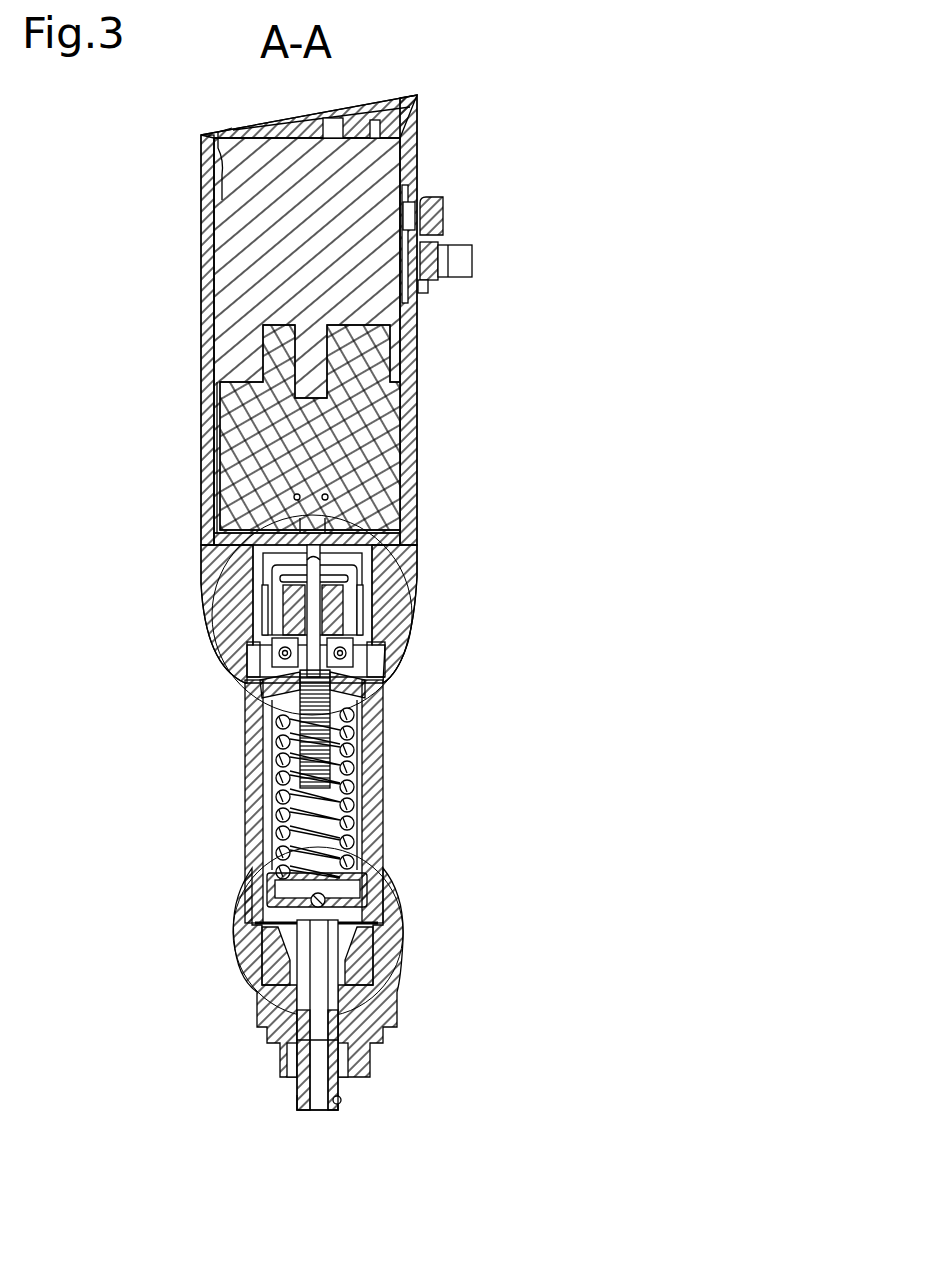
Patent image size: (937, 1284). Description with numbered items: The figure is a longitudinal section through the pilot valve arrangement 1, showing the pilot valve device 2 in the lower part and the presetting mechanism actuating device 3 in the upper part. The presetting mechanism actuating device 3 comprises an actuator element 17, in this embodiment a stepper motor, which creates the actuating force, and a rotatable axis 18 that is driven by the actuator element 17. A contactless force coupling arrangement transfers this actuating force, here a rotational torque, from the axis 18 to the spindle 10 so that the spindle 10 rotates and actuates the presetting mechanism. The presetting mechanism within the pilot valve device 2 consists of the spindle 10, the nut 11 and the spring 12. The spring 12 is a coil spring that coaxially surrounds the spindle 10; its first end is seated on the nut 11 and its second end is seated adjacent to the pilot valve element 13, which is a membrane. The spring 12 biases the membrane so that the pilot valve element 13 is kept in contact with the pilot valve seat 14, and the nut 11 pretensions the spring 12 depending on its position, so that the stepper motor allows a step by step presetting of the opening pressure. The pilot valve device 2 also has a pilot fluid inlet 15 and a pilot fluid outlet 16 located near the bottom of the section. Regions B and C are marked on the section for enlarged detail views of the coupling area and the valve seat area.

The fuel injection valve 1 is at (609, 53).
The pilot valve device 2 is at (249, 810).
The presetting mechanism actuating device 3 is at (202, 415).
The spindle 10 is at (356, 724).
The nut 11 is at (273, 681).
The spring 12 is at (367, 789).
The pilot valve element 13 is at (389, 903).
The pilot valve seat 14 is at (340, 930).
The pilot fluid inlet 15 is at (348, 1078).
The pilot fluid outlet 16 is at (320, 1115).
The actuator element 17 is at (340, 263).
The rotatable axis 18 is at (408, 495).
The detail B is at (404, 663).
The detail C is at (404, 917).